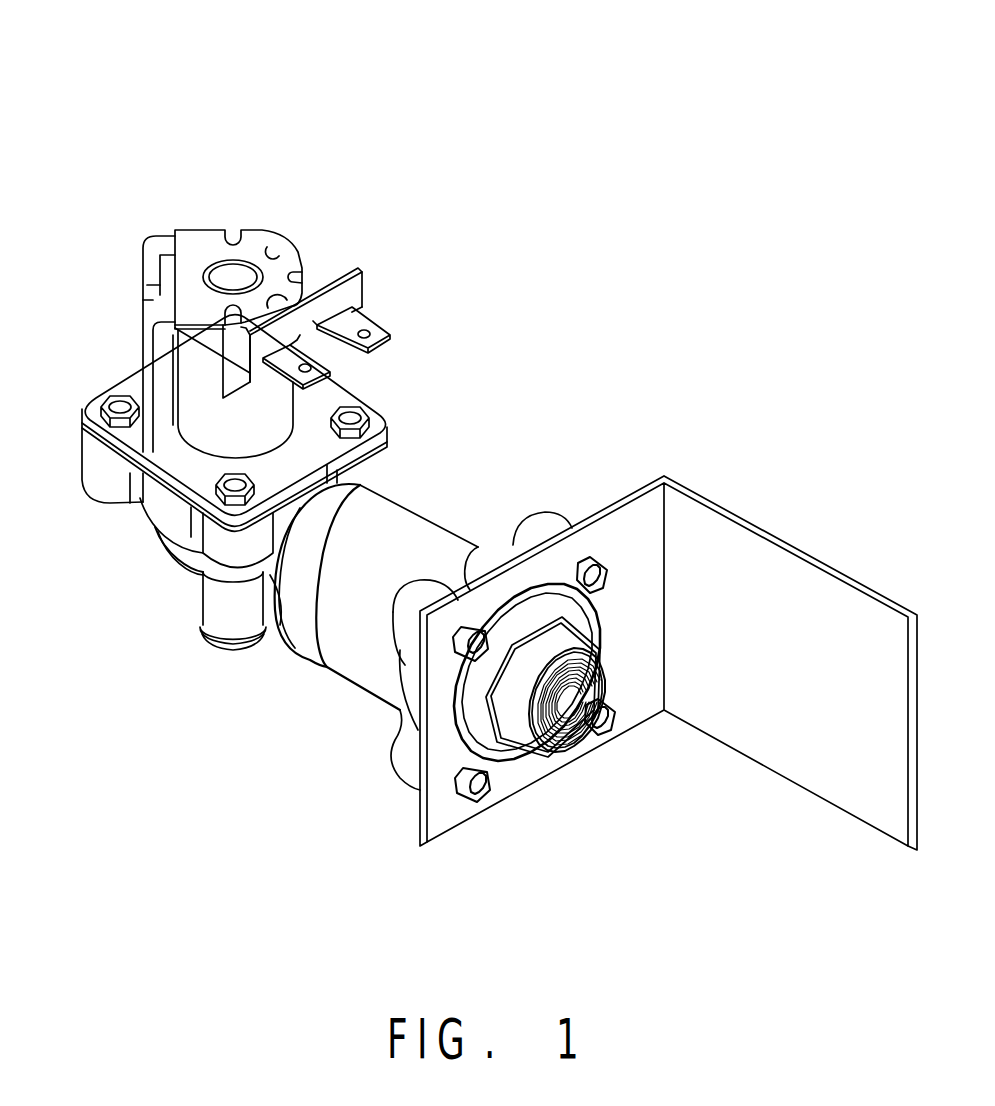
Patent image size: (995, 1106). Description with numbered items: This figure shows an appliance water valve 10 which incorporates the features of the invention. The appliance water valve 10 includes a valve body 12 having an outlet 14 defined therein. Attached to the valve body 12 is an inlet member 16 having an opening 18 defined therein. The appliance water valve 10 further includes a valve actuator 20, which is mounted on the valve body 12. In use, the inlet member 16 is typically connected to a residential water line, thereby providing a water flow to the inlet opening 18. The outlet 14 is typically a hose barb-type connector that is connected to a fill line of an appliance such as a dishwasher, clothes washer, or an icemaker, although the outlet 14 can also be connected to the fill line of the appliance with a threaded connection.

The appliance water valve 10 is at (249, 215).
The valve body 12 is at (365, 500).
The outlet 14 is at (232, 630).
The inlet member 16 is at (519, 718).
The opening 18 is at (573, 730).
The valve actuator 20 is at (197, 385).